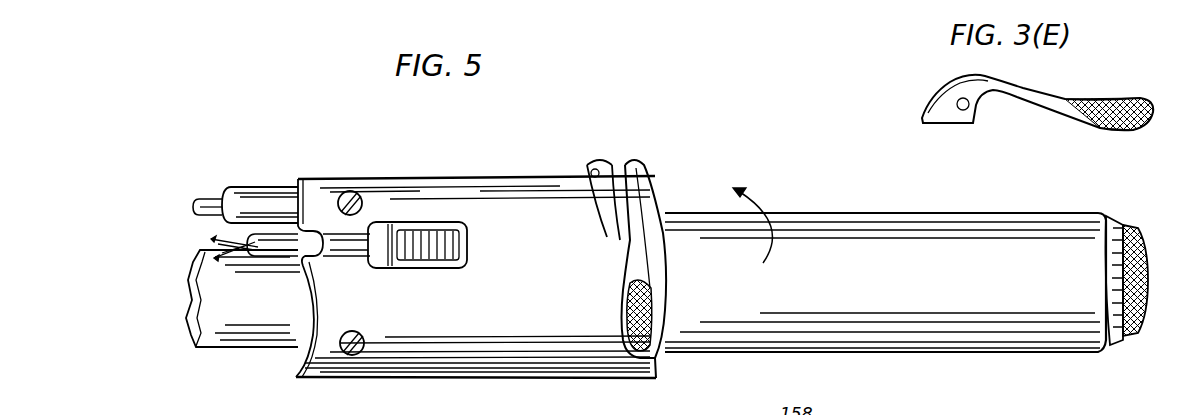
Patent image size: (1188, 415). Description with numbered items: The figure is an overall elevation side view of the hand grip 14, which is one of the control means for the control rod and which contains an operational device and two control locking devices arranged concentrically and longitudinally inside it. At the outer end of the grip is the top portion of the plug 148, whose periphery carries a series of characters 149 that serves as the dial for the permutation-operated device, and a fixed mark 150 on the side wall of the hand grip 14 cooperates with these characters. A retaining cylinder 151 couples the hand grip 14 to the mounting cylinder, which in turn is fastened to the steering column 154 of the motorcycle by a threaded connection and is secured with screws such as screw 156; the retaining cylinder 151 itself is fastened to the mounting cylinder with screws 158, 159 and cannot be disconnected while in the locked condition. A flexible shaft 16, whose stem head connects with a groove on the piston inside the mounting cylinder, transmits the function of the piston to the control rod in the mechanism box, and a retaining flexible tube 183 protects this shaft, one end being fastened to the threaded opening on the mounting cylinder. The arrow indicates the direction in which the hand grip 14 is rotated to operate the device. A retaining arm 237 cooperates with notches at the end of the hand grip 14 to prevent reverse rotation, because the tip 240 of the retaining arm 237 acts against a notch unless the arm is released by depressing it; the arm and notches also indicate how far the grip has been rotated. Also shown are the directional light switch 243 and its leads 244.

In FIG. 5, the hand grip 14 is at (859, 213).
In FIG. 5, the flexible shaft 16 is at (209, 200).
In FIG. 5, the top portion of the plug 148 is at (1126, 226).
In FIG. 5, the series of characters 149 is at (1117, 346).
In FIG. 5, the fixed mark 150 is at (1110, 261).
In FIG. 5, the retaining cylinder 151 is at (440, 170).
In FIG. 5, the steering column 154 is at (245, 349).
In FIG. 5, the screw 156 is at (168, 406).
In FIG. 5, the screw 158 is at (349, 191).
In FIG. 5, the screw 159 is at (352, 331).
In FIG. 5, the retaining flexible tube 183 is at (247, 188).
In FIG. 5, the retaining arm 237 is at (622, 293).
In FIG. 3E, the tip of the retaining arm 240 is at (920, 121).
In FIG. 5, the directional light switch 243 is at (428, 268).
In FIG. 5, the leads 244 is at (207, 237).